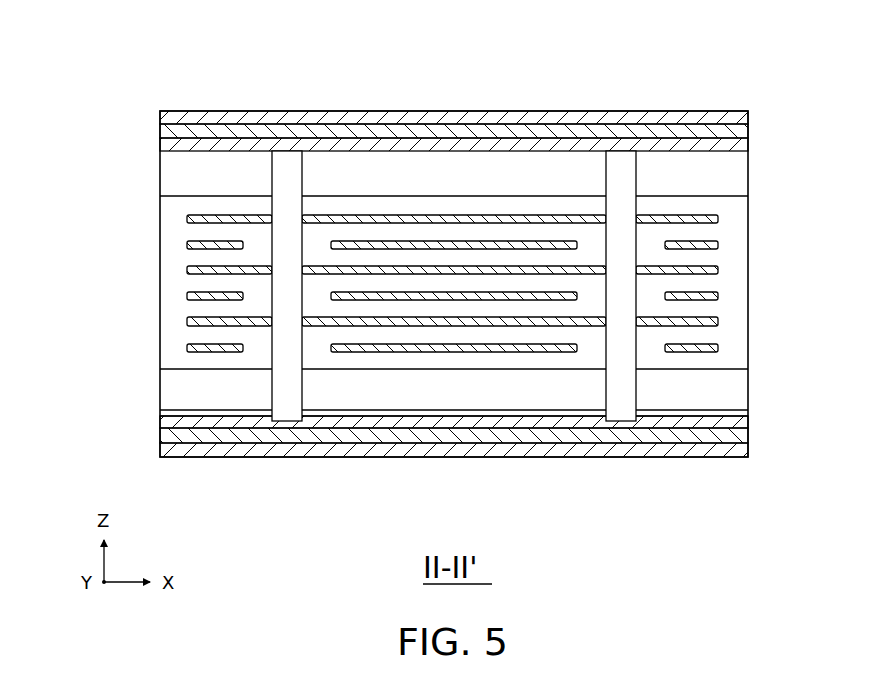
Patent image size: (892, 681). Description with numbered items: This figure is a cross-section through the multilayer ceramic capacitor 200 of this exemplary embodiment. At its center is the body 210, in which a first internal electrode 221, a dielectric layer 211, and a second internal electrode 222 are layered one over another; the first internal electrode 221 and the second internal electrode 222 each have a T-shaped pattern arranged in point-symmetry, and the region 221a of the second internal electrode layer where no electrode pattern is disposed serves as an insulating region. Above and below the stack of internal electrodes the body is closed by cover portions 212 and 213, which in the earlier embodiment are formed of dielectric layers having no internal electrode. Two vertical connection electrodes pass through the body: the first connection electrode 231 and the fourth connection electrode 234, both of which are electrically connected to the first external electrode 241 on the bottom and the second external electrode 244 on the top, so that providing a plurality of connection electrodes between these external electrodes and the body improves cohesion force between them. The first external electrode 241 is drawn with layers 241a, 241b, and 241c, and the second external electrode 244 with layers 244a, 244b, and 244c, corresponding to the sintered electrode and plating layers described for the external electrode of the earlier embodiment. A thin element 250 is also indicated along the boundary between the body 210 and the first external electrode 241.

The multilayer ceramic capacitor 200 is at (298, 35).
The body 210 is at (432, 420).
The dielectric layer 211 is at (716, 312).
The lower cover portion 212 is at (742, 385).
The upper cover portion 213 is at (742, 172).
The first internal electrode 221 is at (240, 322).
The region in which an electrode is not disposed 221a is at (258, 352).
The second internal electrode 222 is at (718, 347).
The first connection electrode 231 is at (287, 160).
The fourth connection electrode 234 is at (620, 160).
The first external electrode 241 is at (72, 402).
The first lower external electrode layer 241a is at (160, 421).
The second lower external electrode layer 241b is at (160, 437).
The third lower external electrode layer 241c is at (160, 456).
The second external electrode 244 is at (72, 92).
The first upper external electrode layer 244a is at (160, 145).
The second upper external electrode layer 244b is at (160, 131).
The third upper external electrode layer 244c is at (160, 114).
The insulating layer 250 is at (363, 416).